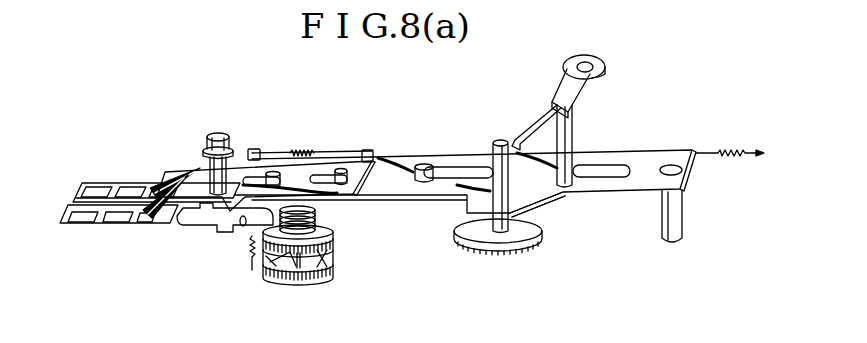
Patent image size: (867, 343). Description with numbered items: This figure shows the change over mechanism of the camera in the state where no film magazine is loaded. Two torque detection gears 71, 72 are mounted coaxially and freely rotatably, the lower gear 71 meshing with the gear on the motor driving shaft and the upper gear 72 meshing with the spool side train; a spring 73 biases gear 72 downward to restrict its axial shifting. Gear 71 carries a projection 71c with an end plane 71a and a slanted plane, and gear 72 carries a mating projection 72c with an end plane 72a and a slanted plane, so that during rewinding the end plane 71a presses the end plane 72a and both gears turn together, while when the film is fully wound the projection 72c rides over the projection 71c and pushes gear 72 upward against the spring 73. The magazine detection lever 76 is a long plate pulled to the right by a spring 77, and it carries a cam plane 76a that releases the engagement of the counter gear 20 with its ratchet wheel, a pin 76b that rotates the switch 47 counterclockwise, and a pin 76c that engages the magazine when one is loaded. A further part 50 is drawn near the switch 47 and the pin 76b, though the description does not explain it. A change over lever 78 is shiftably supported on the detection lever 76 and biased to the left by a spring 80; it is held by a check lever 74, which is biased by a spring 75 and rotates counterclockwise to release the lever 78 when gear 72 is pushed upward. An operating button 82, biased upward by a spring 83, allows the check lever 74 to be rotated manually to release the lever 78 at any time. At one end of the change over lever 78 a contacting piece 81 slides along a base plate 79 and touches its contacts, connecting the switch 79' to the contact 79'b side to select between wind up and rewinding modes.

The counter gear 20 is at (526, 240).
The switch 47 is at (583, 96).
The lever rod 50 is at (548, 104).
The torque detection gear 71 is at (295, 283).
The end plane 71a is at (298, 270).
The projection 71c is at (272, 273).
The torque detection gear 72 is at (320, 277).
The end plane 72a is at (301, 270).
The projection 72c is at (333, 273).
The spring 73 is at (320, 213).
The check lever 74 is at (205, 226).
The spring 75 is at (249, 247).
The magazine detection lever 76 is at (393, 170).
The cam plane 76a is at (553, 203).
The pin 76b is at (572, 146).
The pin 76c is at (683, 237).
The spring 77 is at (727, 151).
The change over lever 78 is at (233, 173).
The base plate 79 is at (132, 175).
The switch 79' is at (101, 206).
The contact 79'b is at (162, 225).
The spring 80 is at (298, 150).
The change over contacting piece 81 is at (164, 202).
The operating button 82 is at (220, 137).
The spring 83 is at (208, 133).